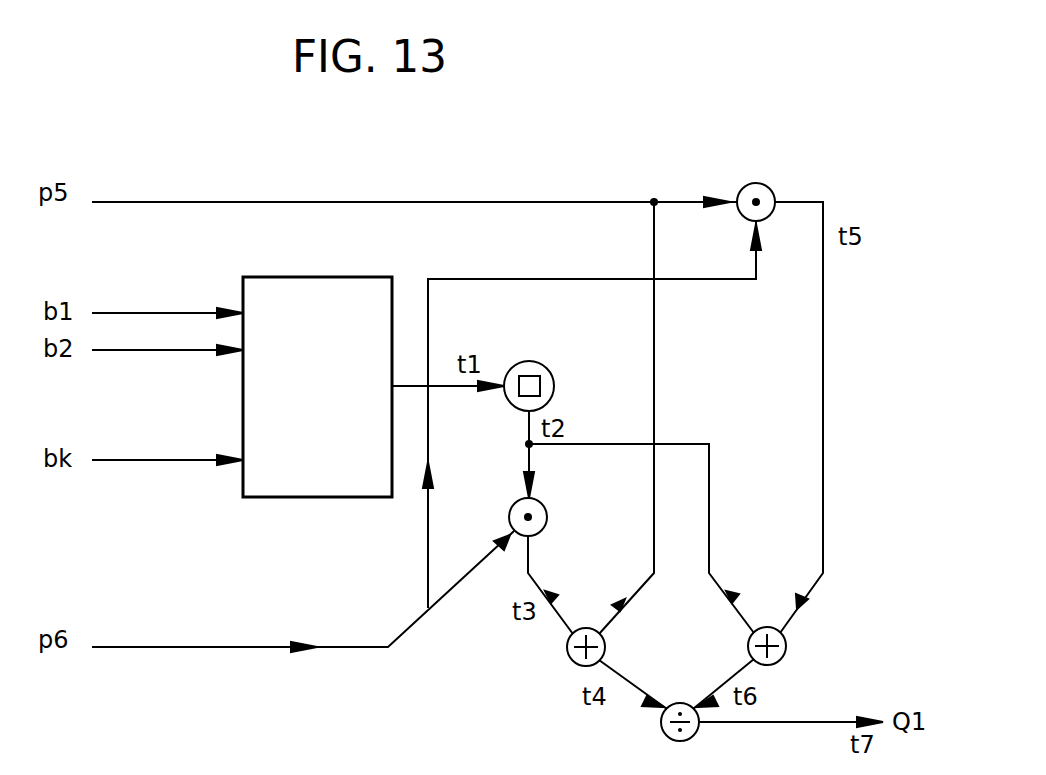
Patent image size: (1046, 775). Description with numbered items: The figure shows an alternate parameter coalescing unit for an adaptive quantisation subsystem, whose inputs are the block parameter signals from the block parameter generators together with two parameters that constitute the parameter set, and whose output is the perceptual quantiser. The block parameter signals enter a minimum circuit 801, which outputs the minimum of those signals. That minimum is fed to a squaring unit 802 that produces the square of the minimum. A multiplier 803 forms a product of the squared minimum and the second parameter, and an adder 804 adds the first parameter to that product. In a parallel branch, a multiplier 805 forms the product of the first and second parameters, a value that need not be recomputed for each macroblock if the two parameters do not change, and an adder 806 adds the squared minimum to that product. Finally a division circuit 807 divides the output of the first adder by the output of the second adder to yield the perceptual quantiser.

The minimum circuit 801 is at (285, 277).
The squaring unit 802 is at (552, 378).
The multiplier 803 is at (546, 513).
The adder 804 is at (640, 636).
The multiplier 805 is at (797, 177).
The adder 806 is at (786, 641).
The division circuit 807 is at (660, 726).